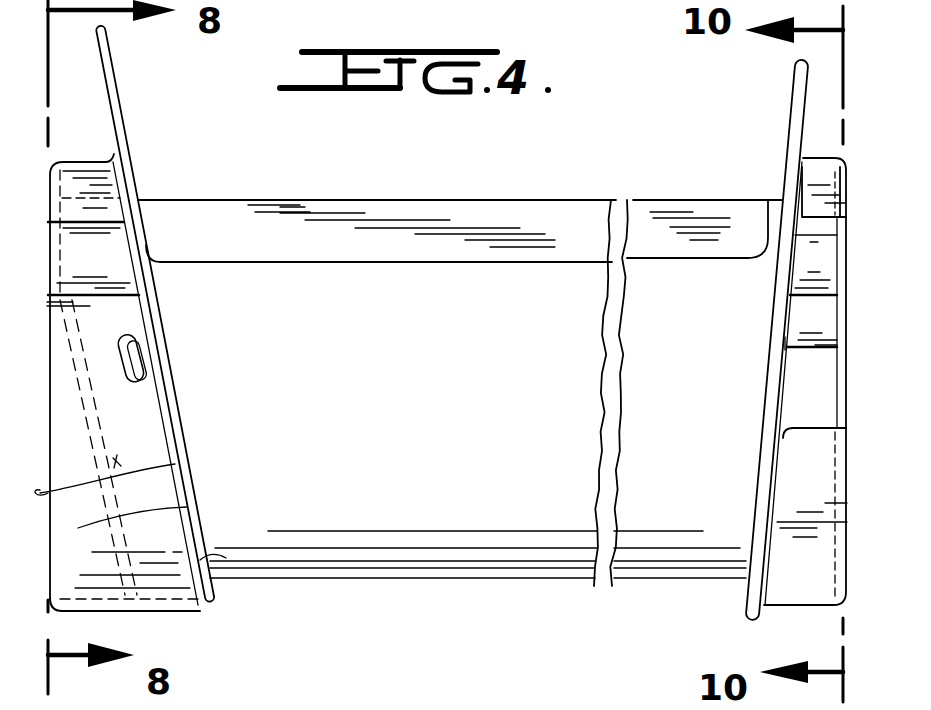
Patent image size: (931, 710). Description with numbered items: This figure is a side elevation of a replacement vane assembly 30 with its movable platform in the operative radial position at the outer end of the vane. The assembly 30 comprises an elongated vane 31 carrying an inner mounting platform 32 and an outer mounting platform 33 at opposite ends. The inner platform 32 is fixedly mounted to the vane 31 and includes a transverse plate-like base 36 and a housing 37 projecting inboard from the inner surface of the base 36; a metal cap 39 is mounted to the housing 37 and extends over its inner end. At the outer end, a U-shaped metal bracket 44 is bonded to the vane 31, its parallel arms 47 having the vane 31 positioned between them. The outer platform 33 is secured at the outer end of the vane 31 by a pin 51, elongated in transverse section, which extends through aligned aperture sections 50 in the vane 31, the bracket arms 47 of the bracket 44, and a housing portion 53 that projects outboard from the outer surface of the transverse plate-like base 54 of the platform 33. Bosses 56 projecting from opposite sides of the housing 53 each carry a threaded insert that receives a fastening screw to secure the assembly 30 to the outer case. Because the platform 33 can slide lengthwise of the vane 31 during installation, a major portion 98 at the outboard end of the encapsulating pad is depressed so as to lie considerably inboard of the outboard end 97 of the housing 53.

The replacement vane assembly 30 is at (574, 188).
The vane 31 is at (483, 399).
The inner mounting platform 32 is at (788, 385).
The outer mounting platform 33 is at (133, 613).
The base 36 is at (788, 118).
The housing 37 is at (811, 322).
The metal cap 39 is at (800, 578).
The U-shaped metal bracket 44 is at (100, 464).
The parallel arms 47 is at (239, 447).
The aligned aperture sections 50 is at (128, 332).
The pin 51 is at (143, 369).
The housing portion 53 is at (188, 511).
The base 54 is at (121, 106).
The bosses 56 is at (148, 306).
The outboard end of housing 97 is at (177, 473).
The depressed portion of pad 98 is at (243, 582).